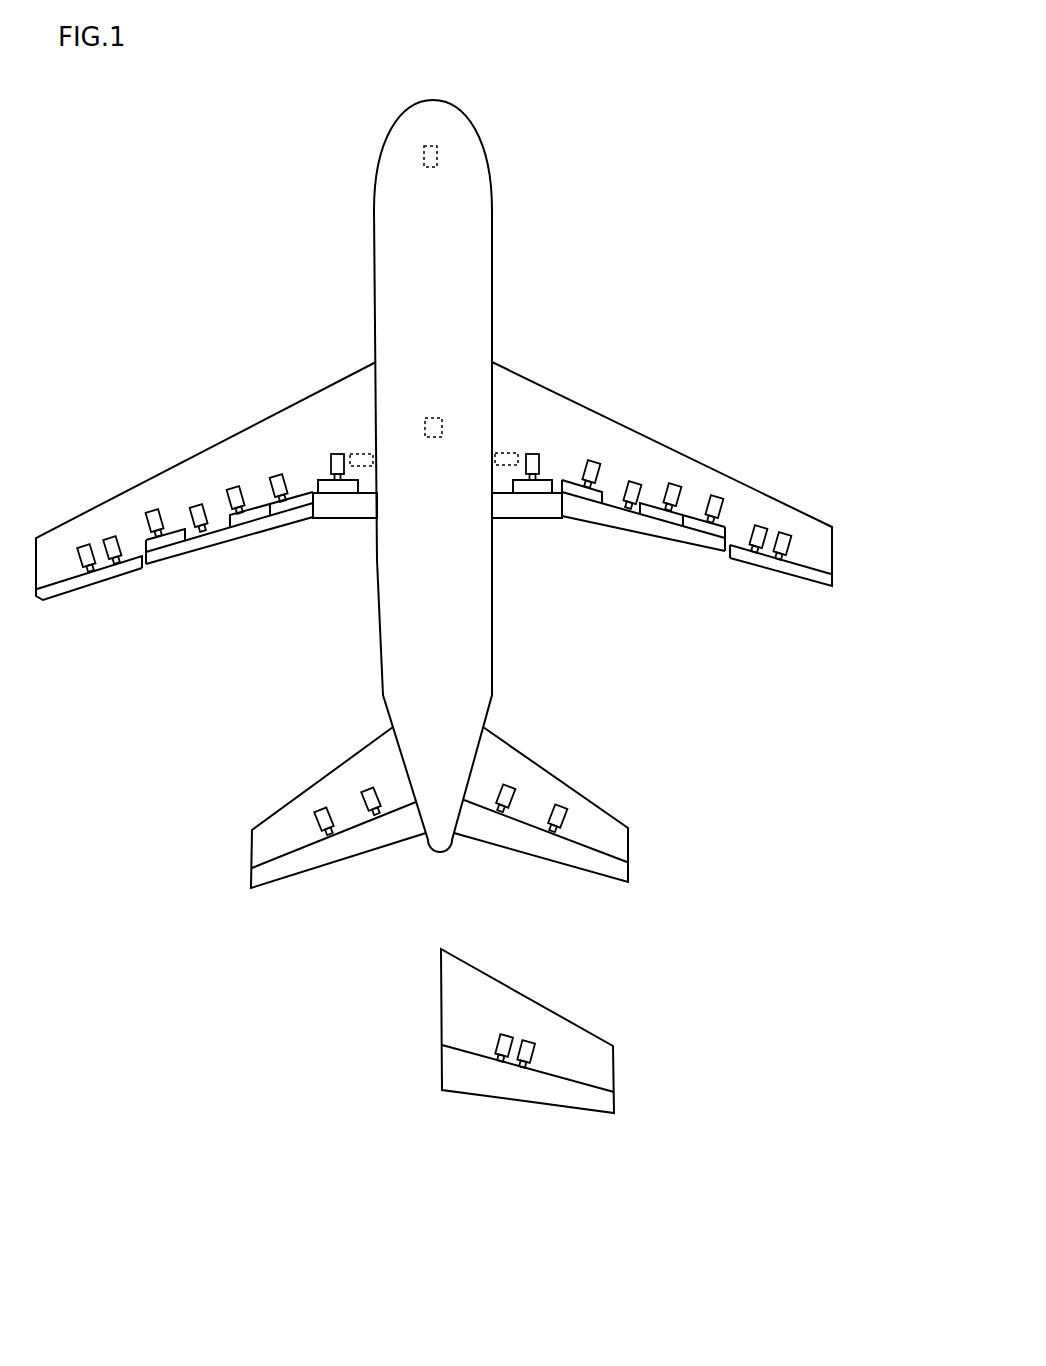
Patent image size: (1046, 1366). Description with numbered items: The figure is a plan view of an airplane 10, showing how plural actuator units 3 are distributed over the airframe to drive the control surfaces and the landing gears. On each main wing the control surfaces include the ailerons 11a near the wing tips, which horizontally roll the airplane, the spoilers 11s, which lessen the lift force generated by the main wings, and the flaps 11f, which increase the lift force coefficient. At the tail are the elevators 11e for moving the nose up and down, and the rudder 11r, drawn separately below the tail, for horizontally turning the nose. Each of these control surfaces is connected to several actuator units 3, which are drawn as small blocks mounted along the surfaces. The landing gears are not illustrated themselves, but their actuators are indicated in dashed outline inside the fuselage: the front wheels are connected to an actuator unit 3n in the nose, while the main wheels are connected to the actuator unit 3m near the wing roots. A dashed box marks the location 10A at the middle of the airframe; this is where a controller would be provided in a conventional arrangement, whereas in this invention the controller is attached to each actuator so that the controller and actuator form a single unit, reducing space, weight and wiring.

The airplane 10 is at (684, 176).
The location at the middle of the airframe 10A is at (443, 423).
The actuator unit 3 is at (334, 455).
The actuator unit for front wheels 3n is at (439, 150).
The actuator unit for main wheels 3m is at (361, 453).
The aileron 11a is at (80, 582).
The flap 11f is at (230, 535).
The spoiler 11s is at (203, 527).
The elevator 11e is at (314, 858).
The rudder 11r is at (570, 1094).